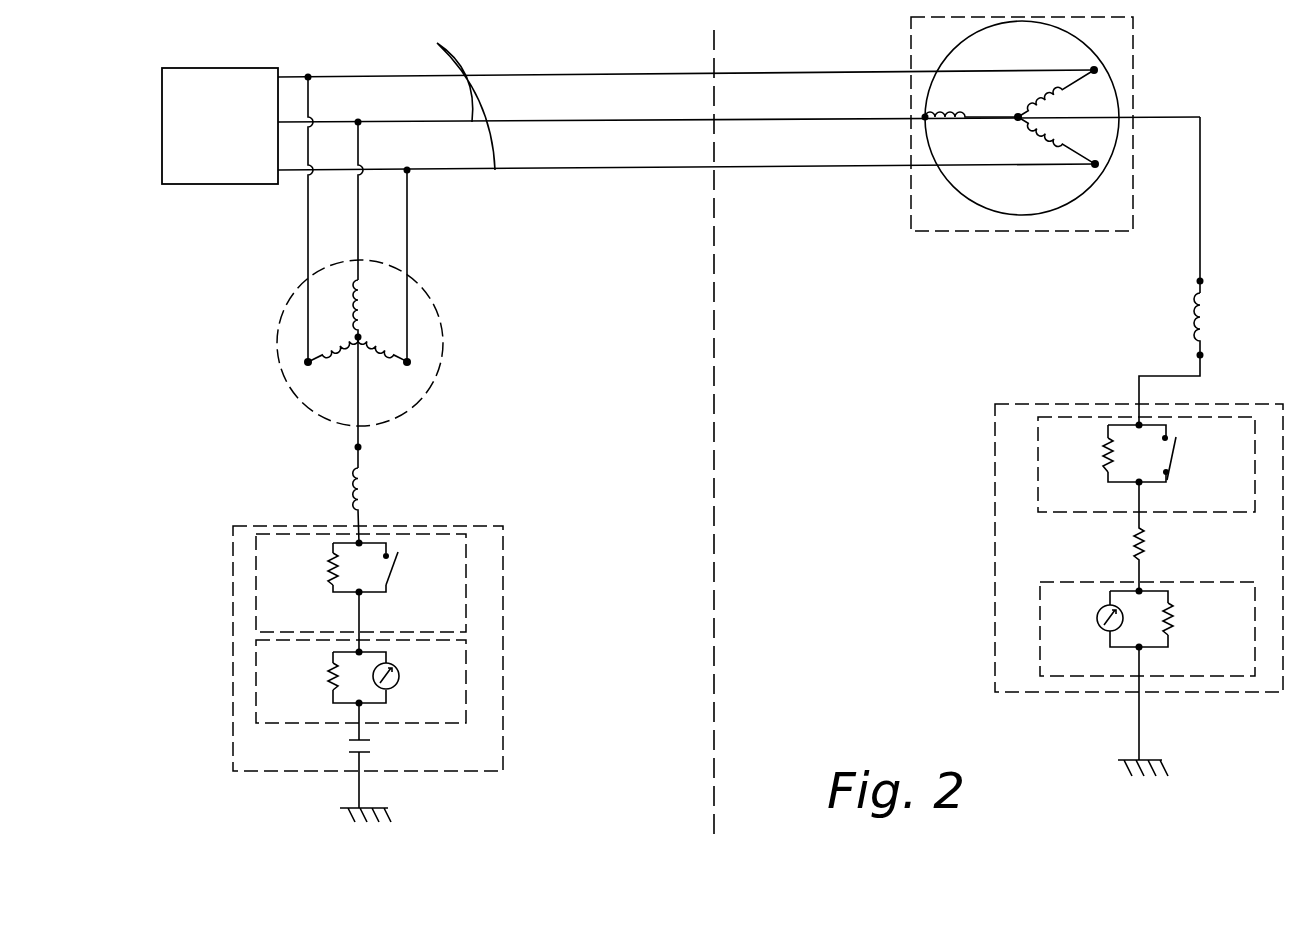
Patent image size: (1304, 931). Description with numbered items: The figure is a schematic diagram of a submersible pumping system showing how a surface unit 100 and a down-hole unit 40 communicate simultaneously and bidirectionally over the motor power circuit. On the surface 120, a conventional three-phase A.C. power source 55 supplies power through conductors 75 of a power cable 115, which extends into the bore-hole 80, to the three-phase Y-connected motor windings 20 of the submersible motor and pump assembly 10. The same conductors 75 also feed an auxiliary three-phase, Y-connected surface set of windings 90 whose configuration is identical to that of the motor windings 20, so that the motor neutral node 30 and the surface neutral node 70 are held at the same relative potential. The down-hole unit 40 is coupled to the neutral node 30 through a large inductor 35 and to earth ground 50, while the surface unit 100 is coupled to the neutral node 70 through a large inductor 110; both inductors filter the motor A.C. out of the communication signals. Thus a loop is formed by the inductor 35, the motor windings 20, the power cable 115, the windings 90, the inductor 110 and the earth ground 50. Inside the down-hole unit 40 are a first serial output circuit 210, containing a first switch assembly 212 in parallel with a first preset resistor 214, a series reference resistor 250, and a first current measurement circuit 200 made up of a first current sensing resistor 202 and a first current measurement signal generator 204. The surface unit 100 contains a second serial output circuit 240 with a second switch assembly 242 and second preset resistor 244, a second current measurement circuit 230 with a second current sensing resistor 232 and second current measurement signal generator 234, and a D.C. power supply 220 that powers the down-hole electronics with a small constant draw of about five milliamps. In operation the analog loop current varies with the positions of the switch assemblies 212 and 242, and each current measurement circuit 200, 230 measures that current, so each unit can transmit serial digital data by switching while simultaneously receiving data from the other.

The submersible motor and pump assembly 10 is at (1133, 70).
The three-phase A.C. motor windings 20 is at (953, 186).
The neutral node 30 is at (1017, 116).
The large inductor 35 is at (1190, 322).
The down-hole unit 40 is at (994, 480).
The earth ground 50 is at (388, 810).
The A.C. power source 55 is at (220, 126).
The neutral node 70 is at (366, 331).
The conductors 75 is at (447, 100).
The bore-hole 80 is at (812, 346).
The surface set of windings 90 is at (277, 343).
The surface unit 100 is at (503, 546).
The large inductor 110 is at (364, 486).
The power cable 115 is at (739, 102).
The surface 120 is at (656, 435).
The first current measurement circuit 200 is at (1093, 581).
The first current sensing resistor 202 is at (1173, 622).
The first current measurement signal generator 204 is at (1097, 628).
The first serial output circuit 210 is at (1062, 512).
The first switch assembly 212 is at (1197, 457).
The first preset resistor 214 is at (1086, 455).
The D.C. power supply 220 is at (371, 752).
The second current measurement circuit 230 is at (466, 684).
The second current sensing resistor 232 is at (328, 677).
The second current measurement signal generator 234 is at (399, 676).
The second serial output circuit 240 is at (466, 612).
The second switch assembly 242 is at (393, 571).
The second preset resistor 244 is at (328, 572).
The reference resistor 250 is at (1145, 547).